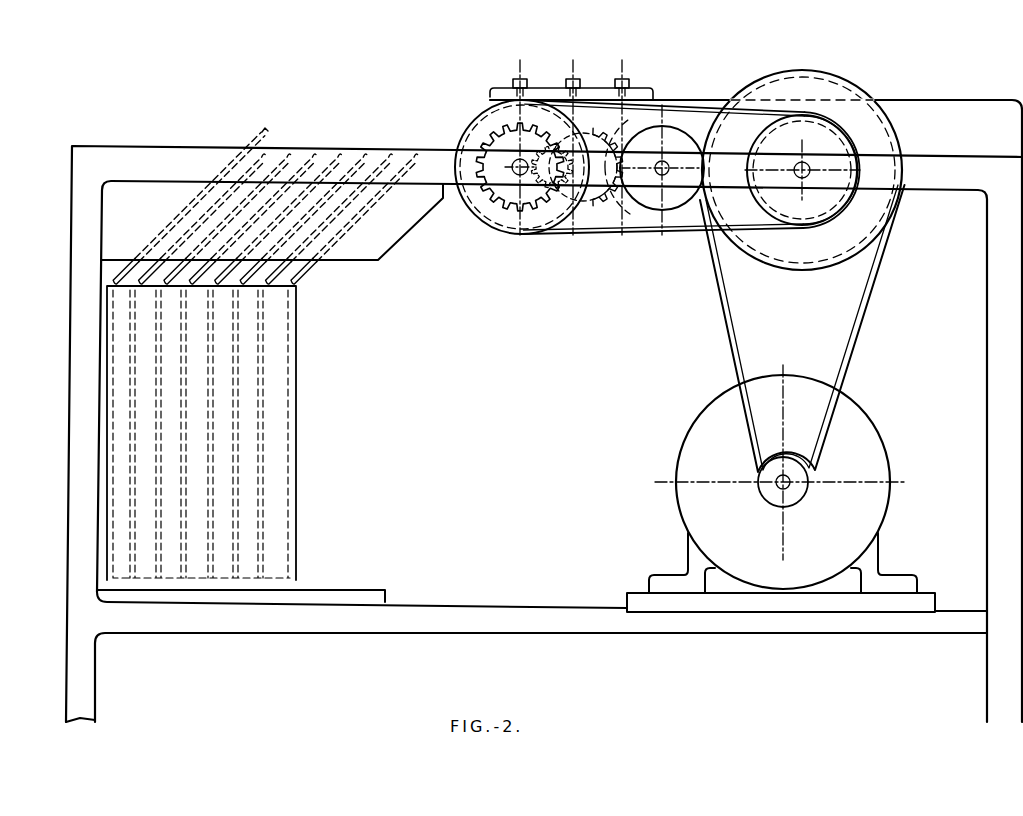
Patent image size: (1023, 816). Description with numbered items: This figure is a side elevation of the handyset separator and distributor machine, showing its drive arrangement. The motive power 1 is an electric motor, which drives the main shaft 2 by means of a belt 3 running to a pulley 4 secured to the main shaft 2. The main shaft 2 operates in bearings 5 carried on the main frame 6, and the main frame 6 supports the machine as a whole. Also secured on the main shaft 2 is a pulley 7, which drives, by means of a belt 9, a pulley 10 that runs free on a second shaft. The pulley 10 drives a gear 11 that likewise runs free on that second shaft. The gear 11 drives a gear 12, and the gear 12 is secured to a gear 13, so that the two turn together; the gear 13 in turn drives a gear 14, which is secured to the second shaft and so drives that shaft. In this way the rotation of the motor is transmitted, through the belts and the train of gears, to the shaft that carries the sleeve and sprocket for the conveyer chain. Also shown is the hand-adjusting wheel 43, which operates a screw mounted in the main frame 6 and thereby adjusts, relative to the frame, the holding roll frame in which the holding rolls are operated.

The motive power 1 is at (878, 456).
The main shaft 2 is at (806, 169).
The belt 3 is at (866, 301).
The pulley 4 is at (778, 261).
The bearings 5 is at (738, 170).
The main frame 6 is at (544, 405).
The pulley 7 is at (802, 170).
The belt 9 is at (603, 229).
The pulley 10 is at (522, 167).
The gear 11 is at (509, 171).
The gear 12 is at (590, 196).
The gear 13 is at (619, 177).
The gear 14 is at (539, 176).
The hand-adjusting wheel 43 is at (662, 233).